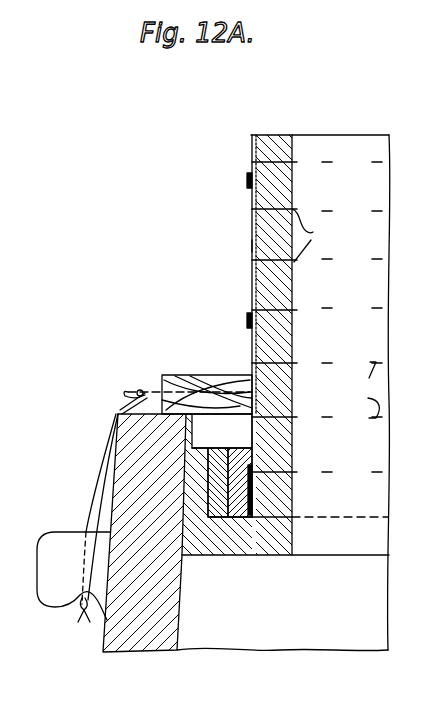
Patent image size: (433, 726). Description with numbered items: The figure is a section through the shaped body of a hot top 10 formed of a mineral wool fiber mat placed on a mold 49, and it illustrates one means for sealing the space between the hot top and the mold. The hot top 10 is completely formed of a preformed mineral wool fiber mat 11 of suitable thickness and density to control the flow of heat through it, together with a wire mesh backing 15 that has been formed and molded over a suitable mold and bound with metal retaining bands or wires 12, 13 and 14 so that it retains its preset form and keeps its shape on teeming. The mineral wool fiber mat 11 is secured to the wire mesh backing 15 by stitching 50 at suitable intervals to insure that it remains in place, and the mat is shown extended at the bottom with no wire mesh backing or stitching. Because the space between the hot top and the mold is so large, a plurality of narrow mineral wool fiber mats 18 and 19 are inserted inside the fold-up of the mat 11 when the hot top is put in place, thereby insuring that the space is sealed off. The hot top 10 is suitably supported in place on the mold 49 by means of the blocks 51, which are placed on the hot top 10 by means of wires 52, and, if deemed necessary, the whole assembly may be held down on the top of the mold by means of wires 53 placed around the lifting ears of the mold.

The hot top 10 is at (362, 195).
The mineral wool fiber mat 11 is at (280, 146).
The metal retaining band or wire 12 is at (247, 180).
The metal retaining band or wire 13 is at (247, 320).
The metal retaining band or wire 14 is at (253, 468).
The wire mesh backing 15 is at (251, 244).
The narrow mineral wool fiber mat 18 is at (217, 452).
The narrow mineral wool fiber mat 19 is at (242, 452).
The mold 49 is at (180, 634).
The stitching 50 is at (335, 313).
The block 51 is at (196, 380).
The wire 52 is at (218, 392).
The wire 53 is at (98, 462).